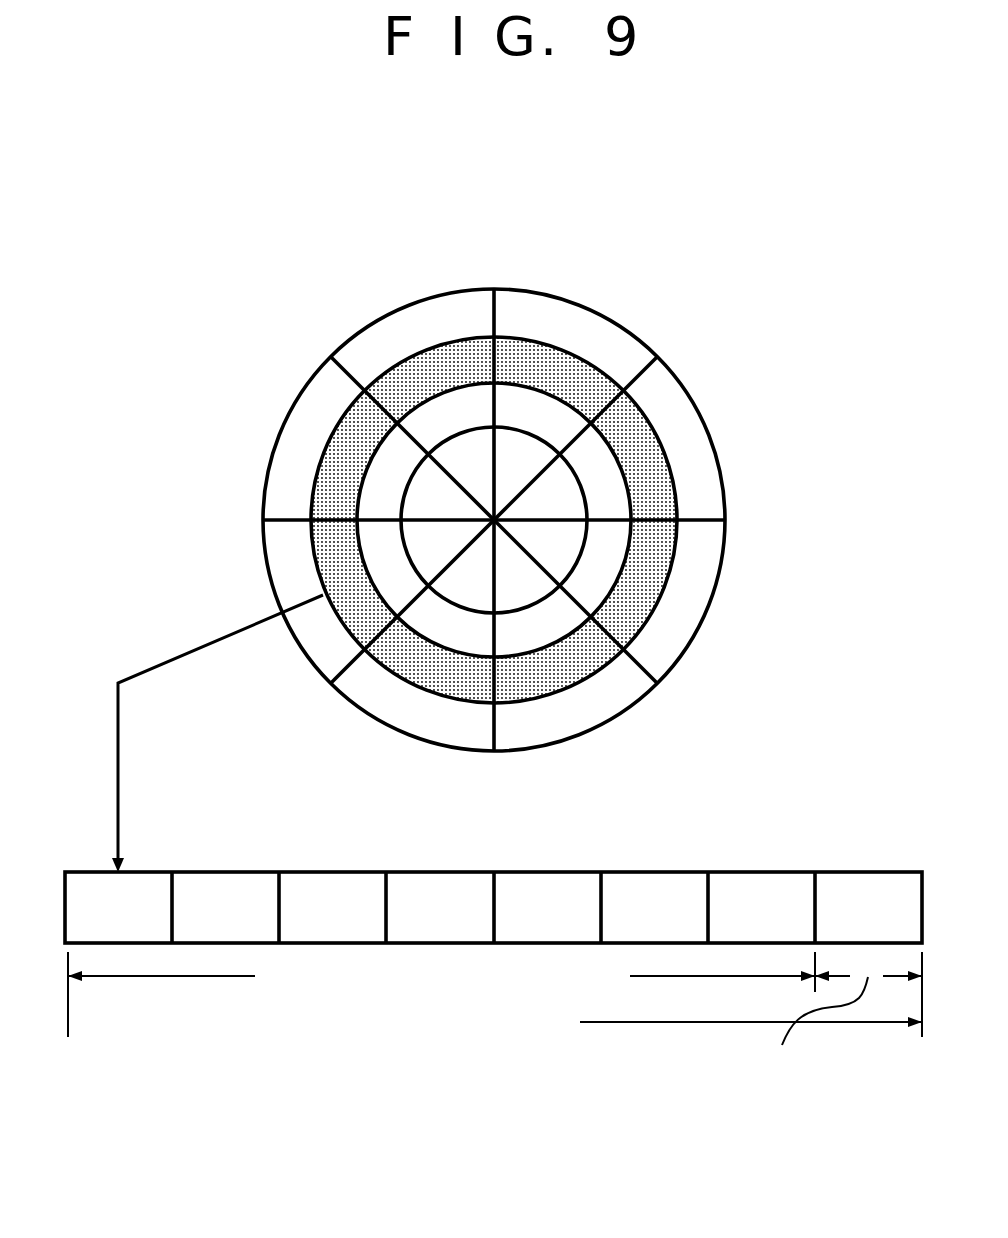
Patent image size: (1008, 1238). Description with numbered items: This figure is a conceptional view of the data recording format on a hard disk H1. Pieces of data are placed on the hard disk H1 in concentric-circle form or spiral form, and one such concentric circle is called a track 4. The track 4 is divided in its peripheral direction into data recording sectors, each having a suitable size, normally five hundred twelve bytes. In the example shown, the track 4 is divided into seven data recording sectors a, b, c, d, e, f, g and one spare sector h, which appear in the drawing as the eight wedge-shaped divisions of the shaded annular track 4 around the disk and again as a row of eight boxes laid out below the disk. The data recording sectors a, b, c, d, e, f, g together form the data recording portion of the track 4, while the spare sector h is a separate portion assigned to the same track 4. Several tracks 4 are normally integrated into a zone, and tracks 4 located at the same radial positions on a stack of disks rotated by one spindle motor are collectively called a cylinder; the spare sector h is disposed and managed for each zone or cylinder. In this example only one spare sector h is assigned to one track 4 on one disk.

The hard disk H1 is at (494, 487).
The track 4 is at (68, 1022).
The data recording sector a is at (354, 584).
The data recording sector b is at (429, 660).
The data recording sector c is at (558, 660).
The data recording sector d is at (634, 584).
The data recording sector e is at (634, 455).
The data recording sector f is at (558, 380).
The data recording sector g is at (429, 380).
The spare sector h is at (354, 455).